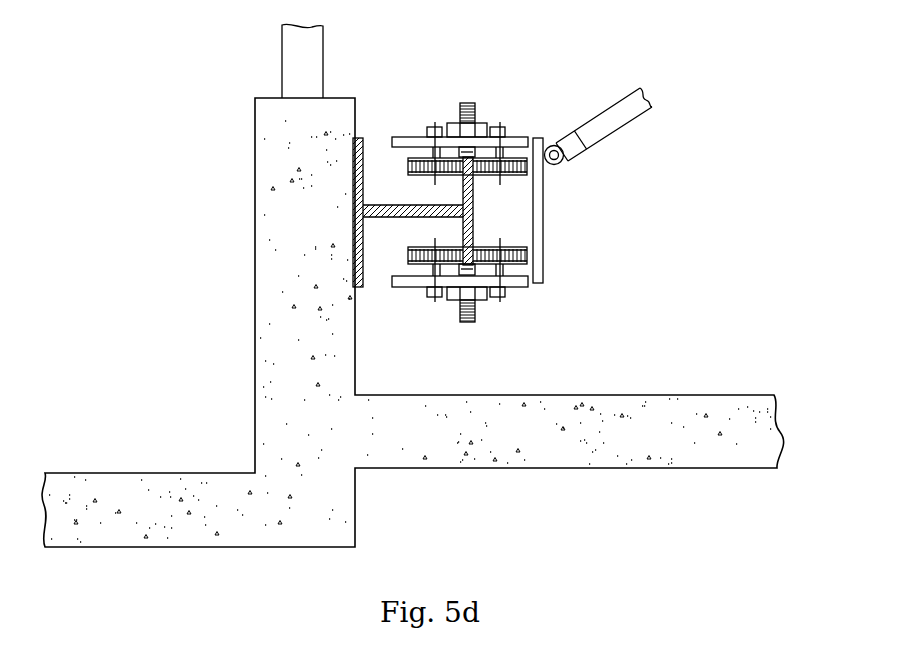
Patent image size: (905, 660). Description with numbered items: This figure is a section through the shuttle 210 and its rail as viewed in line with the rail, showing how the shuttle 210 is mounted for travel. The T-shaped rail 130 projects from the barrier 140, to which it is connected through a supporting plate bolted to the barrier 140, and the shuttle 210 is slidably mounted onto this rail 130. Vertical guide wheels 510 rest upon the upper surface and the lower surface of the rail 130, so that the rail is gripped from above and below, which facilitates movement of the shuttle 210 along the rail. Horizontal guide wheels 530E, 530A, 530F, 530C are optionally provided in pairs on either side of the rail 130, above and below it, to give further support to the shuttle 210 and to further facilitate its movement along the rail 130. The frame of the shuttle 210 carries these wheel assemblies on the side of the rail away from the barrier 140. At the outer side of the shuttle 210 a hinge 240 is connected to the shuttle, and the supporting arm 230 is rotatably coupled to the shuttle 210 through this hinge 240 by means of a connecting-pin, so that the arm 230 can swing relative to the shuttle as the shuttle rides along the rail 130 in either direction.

The barrier 140 is at (337, 98).
The vertical guide wheels 510 is at (468, 103).
The horizontal guide wheel 530E is at (408, 157).
The horizontal guide wheel 530A is at (527, 157).
The horizontal guide wheel 530F is at (410, 265).
The horizontal guide wheel 530C is at (525, 265).
The rail 130 is at (474, 208).
The shuttle 210 is at (543, 262).
The hinge 240 is at (560, 165).
The supporting arm 230 is at (623, 126).